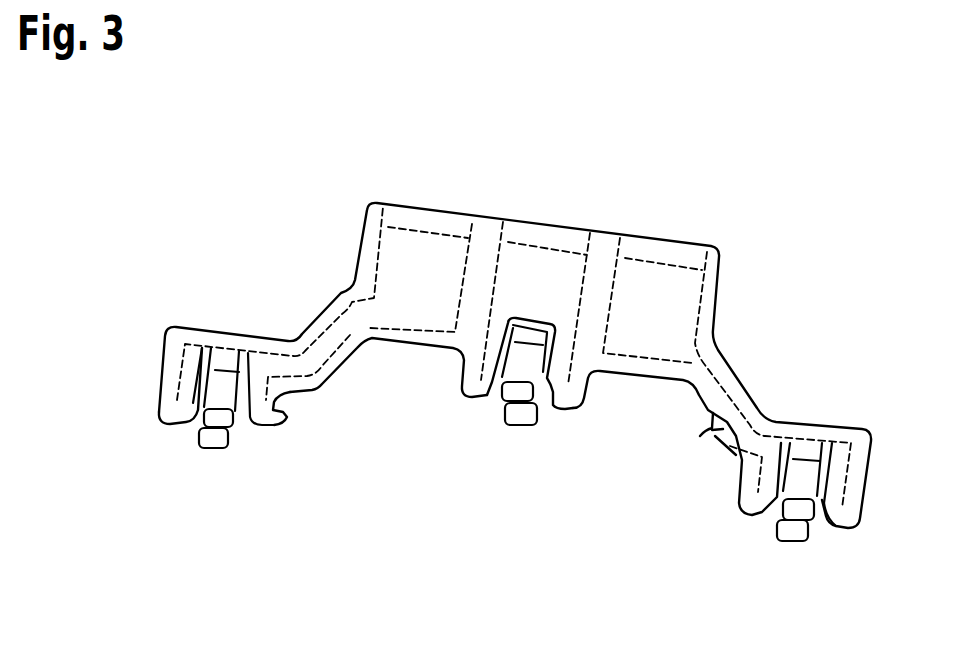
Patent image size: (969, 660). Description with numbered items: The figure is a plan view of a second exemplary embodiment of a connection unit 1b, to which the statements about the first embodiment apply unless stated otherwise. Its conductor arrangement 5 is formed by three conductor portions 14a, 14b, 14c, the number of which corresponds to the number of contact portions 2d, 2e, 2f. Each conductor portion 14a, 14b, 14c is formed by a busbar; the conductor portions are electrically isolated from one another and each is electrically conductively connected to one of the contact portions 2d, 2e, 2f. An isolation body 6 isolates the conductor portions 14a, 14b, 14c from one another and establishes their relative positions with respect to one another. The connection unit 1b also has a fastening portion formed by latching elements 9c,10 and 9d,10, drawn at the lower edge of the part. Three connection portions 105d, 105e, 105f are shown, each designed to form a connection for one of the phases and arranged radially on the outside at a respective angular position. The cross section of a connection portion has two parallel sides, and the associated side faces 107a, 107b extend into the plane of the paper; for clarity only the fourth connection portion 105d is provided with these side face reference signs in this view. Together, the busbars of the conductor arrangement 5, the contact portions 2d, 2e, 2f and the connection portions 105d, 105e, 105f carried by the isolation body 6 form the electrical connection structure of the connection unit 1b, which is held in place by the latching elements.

The connection unit 1b is at (758, 245).
The conductor arrangement 5 is at (707, 165).
The conductor portion 14a is at (430, 224).
The conductor portion 14b is at (545, 236).
The conductor portion 14c is at (660, 250).
The isolation body 6 is at (719, 293).
The side face 107b is at (222, 400).
The contact portion 2d is at (194, 421).
The side face 107a is at (206, 452).
The latching element / fastening portion 9c,10 is at (275, 428).
The fourth connection portion 105d is at (220, 456).
The contact portion 2f is at (500, 389).
The sixth connection portion 105f is at (518, 427).
The latching element / fastening portion 9d,10 is at (700, 437).
The contact portion 2e is at (822, 527).
The fifth connection portion 105e is at (792, 546).